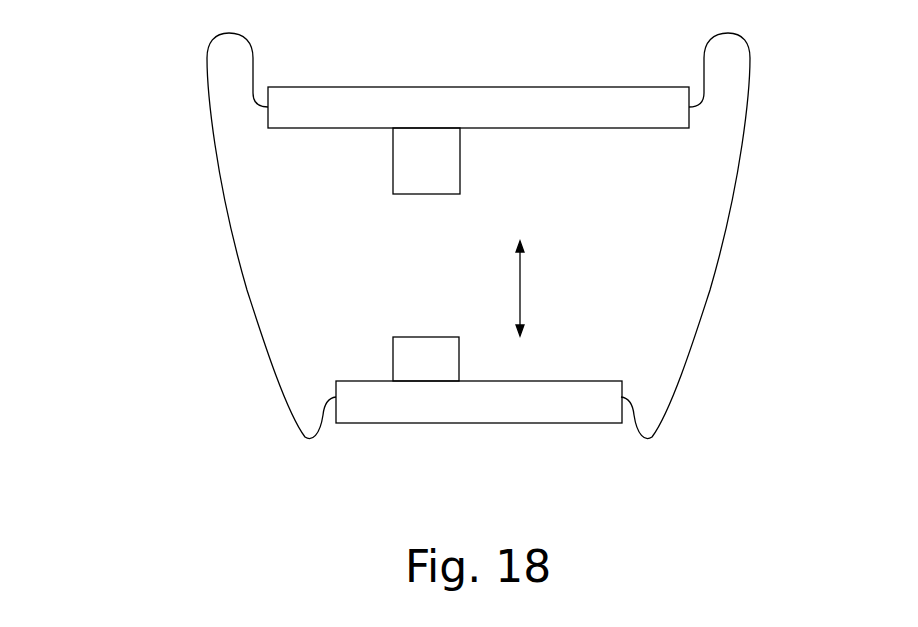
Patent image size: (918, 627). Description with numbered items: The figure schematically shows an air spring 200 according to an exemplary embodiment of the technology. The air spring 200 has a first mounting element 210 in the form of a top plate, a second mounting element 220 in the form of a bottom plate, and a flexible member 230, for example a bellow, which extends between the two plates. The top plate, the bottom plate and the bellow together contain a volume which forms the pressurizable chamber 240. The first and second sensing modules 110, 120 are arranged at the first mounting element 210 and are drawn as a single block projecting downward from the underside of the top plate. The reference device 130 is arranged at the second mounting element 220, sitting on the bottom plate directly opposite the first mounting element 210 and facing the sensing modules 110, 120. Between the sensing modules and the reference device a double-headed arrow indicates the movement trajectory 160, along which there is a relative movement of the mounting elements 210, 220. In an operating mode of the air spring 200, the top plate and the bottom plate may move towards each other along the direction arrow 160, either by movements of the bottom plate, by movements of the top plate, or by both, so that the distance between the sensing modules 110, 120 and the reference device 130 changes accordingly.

The first sensing module 110 is at (396, 201).
The second sensing module 120 is at (426, 182).
The reference device 130 is at (445, 363).
The movement trajectory 160 is at (522, 285).
The air spring 200 is at (450, 236).
The first mounting element 210 is at (447, 97).
The second mounting element 220 is at (478, 412).
The flexible member 230 is at (730, 208).
The pressurizable chamber 240 is at (260, 291).